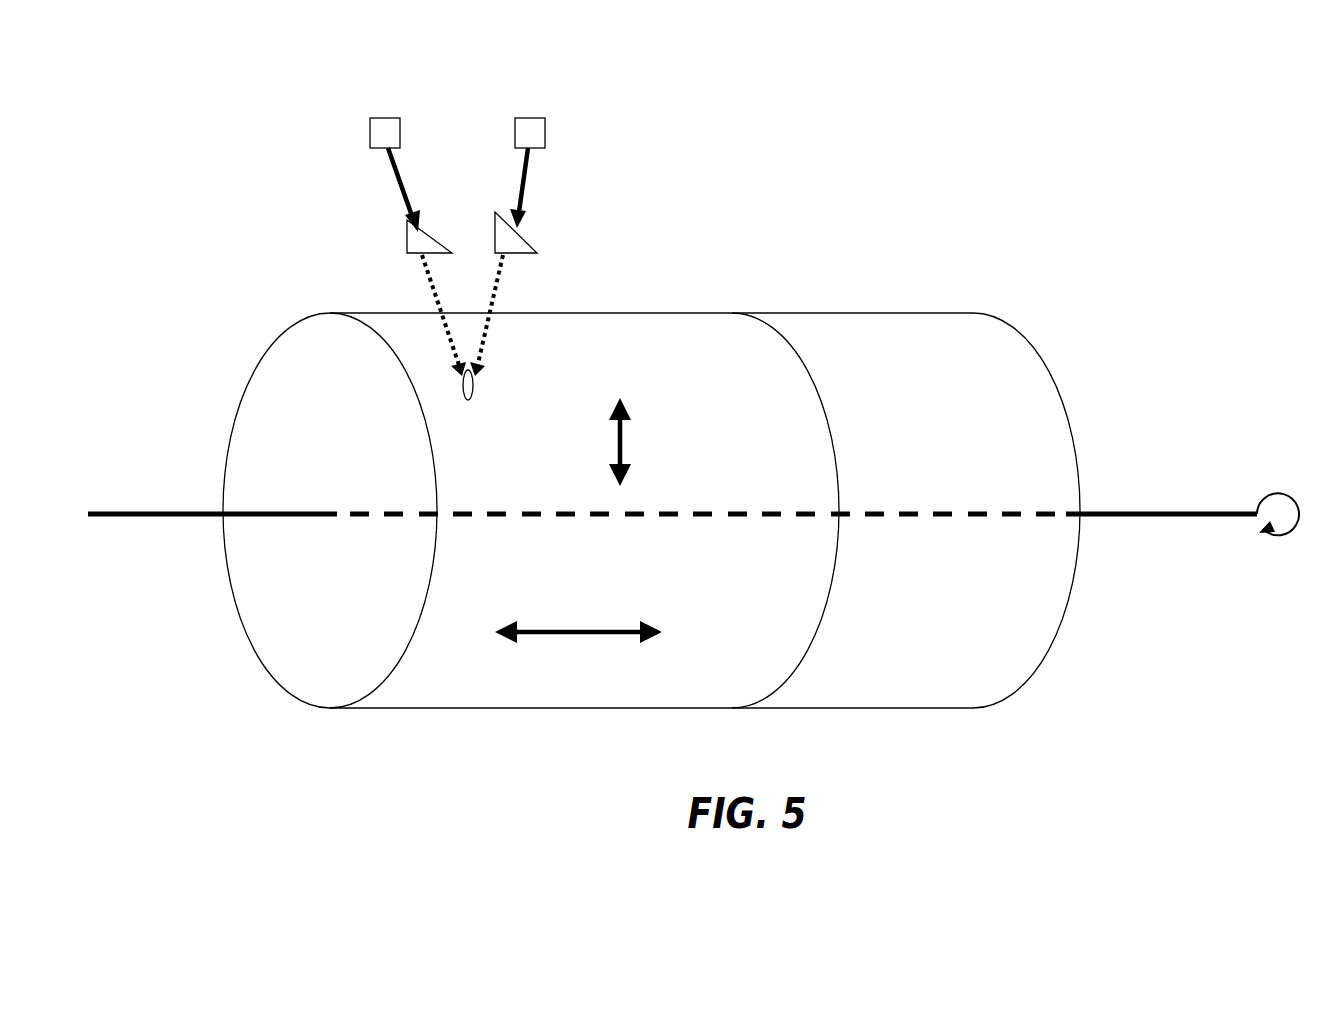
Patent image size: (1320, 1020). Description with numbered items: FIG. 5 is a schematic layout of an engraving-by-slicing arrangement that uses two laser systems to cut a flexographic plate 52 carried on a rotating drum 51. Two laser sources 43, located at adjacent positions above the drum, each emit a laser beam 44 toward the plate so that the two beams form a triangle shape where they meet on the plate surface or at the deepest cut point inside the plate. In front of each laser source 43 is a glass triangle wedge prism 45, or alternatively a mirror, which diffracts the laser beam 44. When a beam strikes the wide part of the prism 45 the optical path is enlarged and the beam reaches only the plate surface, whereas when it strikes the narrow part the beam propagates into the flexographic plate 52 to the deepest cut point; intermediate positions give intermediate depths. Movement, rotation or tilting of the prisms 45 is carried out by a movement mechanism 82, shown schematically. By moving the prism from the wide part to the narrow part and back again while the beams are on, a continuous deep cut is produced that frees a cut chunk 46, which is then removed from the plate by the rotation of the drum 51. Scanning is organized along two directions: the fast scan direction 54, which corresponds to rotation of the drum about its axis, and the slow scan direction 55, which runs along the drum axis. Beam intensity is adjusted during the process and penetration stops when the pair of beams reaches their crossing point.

The laser sources 43 is at (383, 118).
The laser beams 44 is at (404, 187).
The triangle wedge prism 45 is at (432, 243).
The movement mechanism 82 is at (432, 255).
The cut chunk to be removed 46 is at (473, 393).
The drum 51 is at (919, 350).
The flexographic plate 52 is at (692, 351).
The fast scan direction 54 is at (622, 448).
The slow scan direction 55 is at (563, 628).